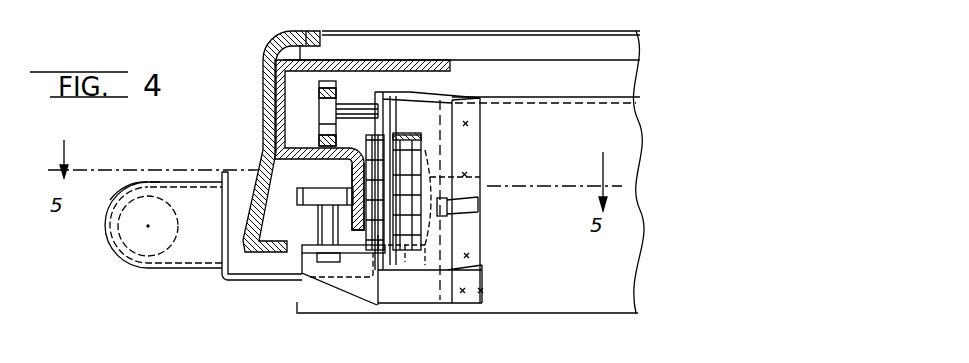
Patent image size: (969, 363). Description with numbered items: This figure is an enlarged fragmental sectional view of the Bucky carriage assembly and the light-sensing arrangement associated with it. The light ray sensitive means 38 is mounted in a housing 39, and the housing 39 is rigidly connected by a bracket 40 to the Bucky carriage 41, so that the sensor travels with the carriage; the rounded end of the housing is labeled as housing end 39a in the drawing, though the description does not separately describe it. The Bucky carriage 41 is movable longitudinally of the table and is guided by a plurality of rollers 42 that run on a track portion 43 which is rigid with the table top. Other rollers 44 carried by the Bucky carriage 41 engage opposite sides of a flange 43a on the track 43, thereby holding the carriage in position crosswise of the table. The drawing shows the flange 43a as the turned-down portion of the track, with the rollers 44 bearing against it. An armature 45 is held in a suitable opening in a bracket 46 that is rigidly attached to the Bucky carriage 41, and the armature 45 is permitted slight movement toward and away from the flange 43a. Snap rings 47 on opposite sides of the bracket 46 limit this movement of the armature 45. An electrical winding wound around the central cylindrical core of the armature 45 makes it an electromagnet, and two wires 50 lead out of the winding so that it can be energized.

The light ray sensitive means 38 is at (146, 258).
The housing 39 is at (193, 268).
The arm end portion 39a is at (117, 196).
The bracket 40 is at (256, 281).
The Bucky carriage 41 is at (527, 101).
The rollers 42 is at (325, 92).
The track portion 43 is at (300, 149).
The flange 43a is at (352, 185).
The rollers 44 is at (302, 190).
The armature 45 is at (413, 137).
The bracket 46 is at (472, 238).
The snap rings 47 is at (375, 133).
The wires 50 is at (478, 213).